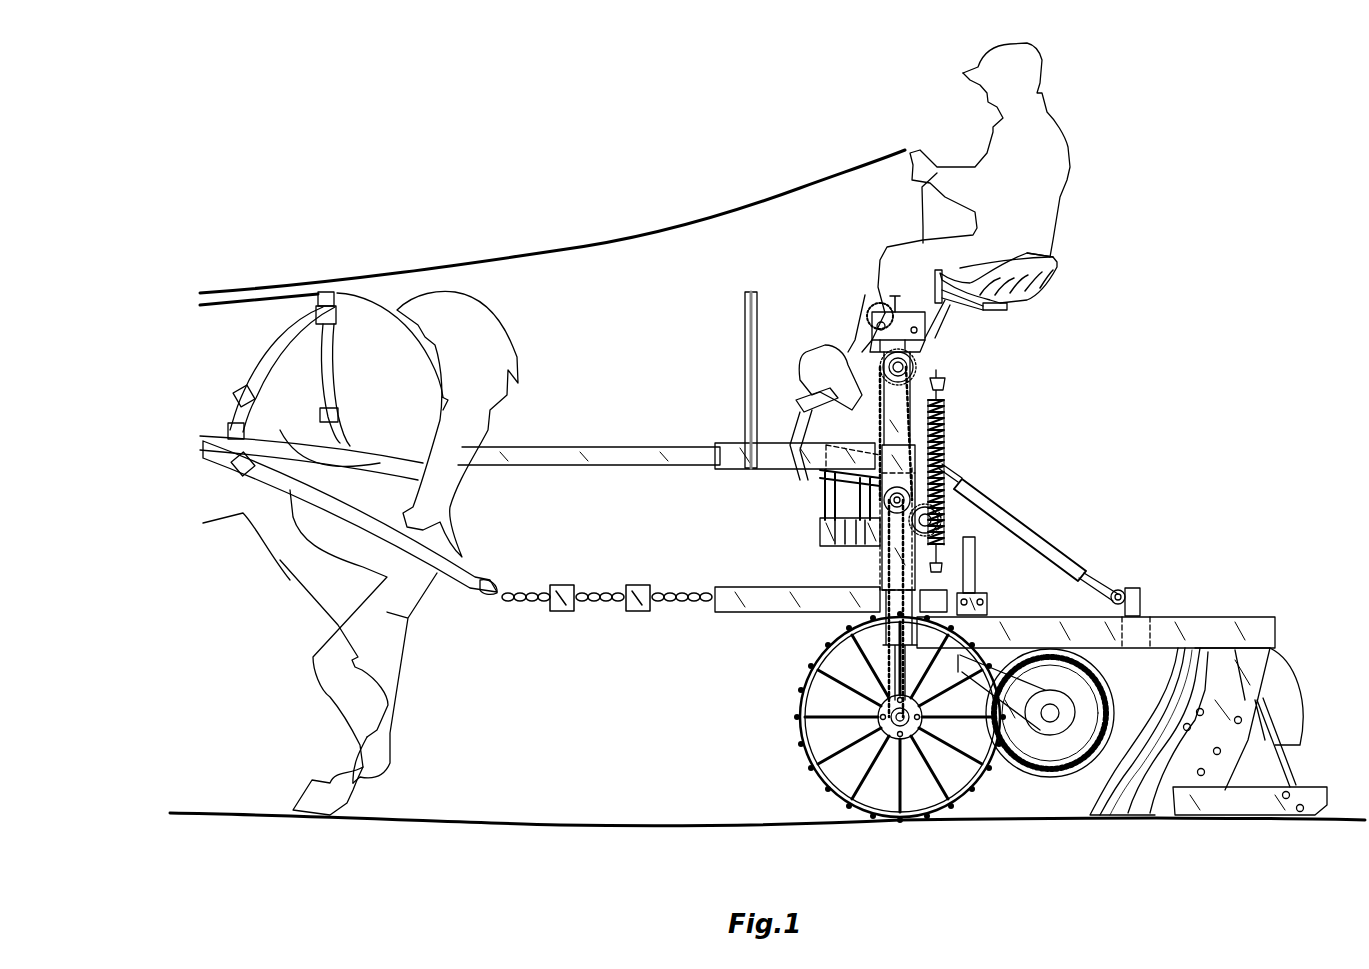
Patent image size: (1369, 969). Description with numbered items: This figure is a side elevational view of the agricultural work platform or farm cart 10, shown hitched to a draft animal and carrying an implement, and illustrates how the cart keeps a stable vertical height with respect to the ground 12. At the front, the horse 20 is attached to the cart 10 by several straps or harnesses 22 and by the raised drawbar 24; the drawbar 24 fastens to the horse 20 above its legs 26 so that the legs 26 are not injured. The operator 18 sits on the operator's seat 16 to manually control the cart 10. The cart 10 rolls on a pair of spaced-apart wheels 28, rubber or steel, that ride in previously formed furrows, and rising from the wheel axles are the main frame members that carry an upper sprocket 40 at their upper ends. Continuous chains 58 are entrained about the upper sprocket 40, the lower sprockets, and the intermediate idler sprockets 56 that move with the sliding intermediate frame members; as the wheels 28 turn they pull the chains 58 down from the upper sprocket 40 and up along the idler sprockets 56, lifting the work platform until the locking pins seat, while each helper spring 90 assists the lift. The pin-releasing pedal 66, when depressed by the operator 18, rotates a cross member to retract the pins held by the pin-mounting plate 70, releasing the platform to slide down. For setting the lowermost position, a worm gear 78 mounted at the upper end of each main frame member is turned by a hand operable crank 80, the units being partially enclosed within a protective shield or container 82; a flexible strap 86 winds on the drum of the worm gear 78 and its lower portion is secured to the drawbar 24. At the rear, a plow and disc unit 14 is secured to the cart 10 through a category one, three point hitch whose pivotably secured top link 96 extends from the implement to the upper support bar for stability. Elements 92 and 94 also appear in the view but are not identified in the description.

The farm cart 10 is at (1063, 440).
The ground 12 is at (510, 822).
The plow and disc unit 14 is at (1165, 648).
The operator's seat 16 is at (1040, 283).
The operator 18 is at (1073, 167).
The horse 20 is at (377, 306).
The straps or harnesses 22 is at (327, 371).
The raised drawbar 24 is at (643, 468).
The legs 26 is at (287, 573).
The wheels 28 is at (812, 770).
The upper sprocket 40 is at (912, 358).
The intermediate idler sprockets 56 is at (883, 552).
The continuous chains 58 is at (872, 570).
The pin-releasing pedal 66 is at (786, 405).
The pin-mounting plate 70 is at (820, 528).
The worm gear 78 is at (883, 315).
The hand operable crank 80 is at (980, 260).
The protective shield or container 82 is at (963, 307).
The flexible strap 86 is at (860, 345).
The helper spring 90 is at (945, 437).
The spring eye bolt 92 is at (942, 372).
The bracket 94 is at (974, 592).
The top link 96 is at (1042, 530).